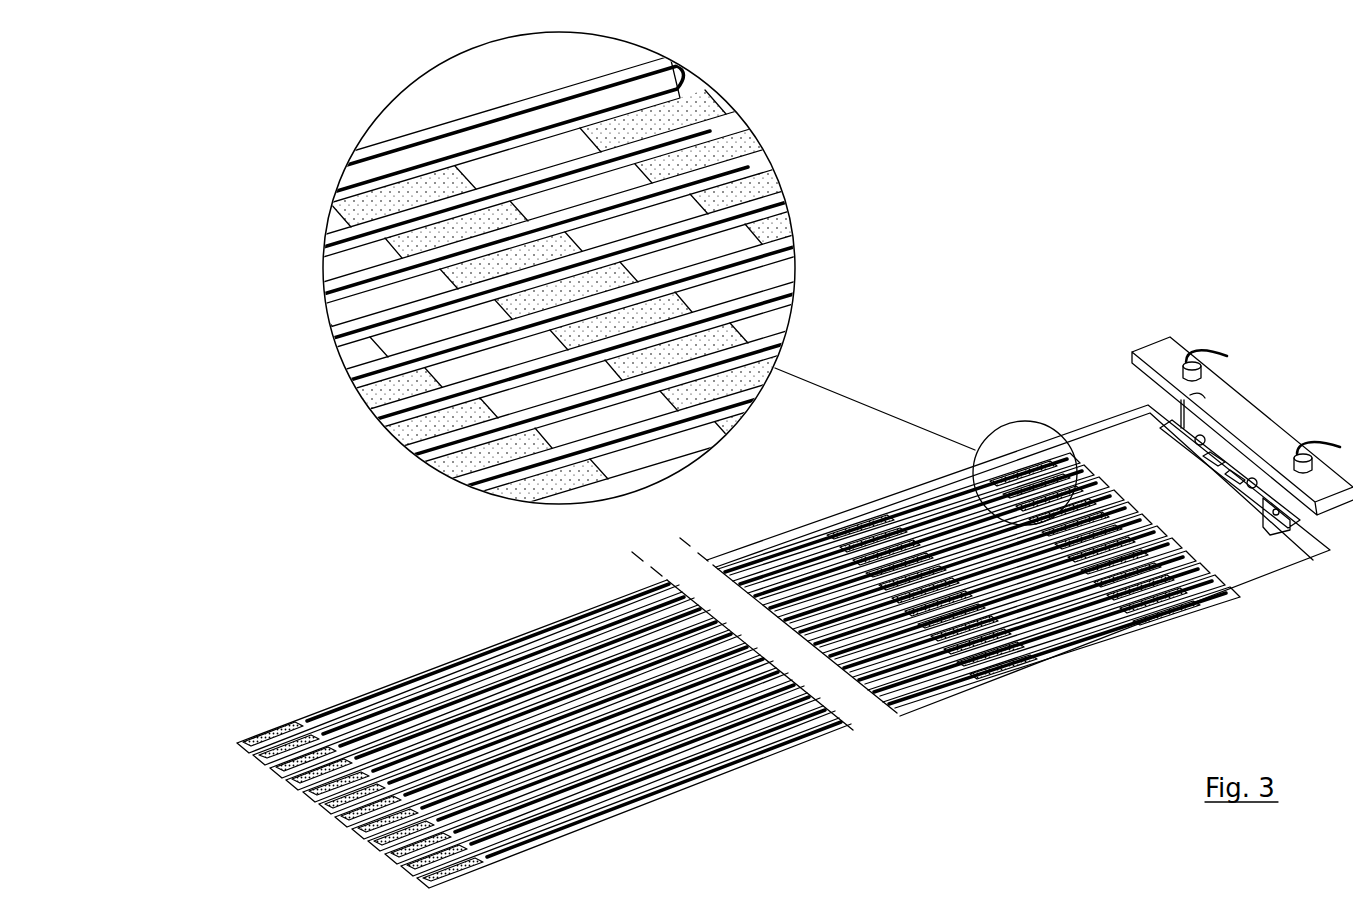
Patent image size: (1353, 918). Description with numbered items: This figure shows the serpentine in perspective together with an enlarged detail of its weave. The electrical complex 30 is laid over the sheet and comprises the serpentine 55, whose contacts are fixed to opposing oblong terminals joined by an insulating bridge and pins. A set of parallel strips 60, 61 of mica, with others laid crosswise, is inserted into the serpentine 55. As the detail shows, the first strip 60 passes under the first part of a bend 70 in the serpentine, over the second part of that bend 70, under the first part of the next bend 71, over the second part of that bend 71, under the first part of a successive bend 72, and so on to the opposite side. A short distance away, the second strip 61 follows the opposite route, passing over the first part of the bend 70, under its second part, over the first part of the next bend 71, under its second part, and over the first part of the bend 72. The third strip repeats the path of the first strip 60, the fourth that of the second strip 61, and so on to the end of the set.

The electrical complex 30 is at (1262, 400).
The serpentine 55 is at (434, 414).
The first strip 60 is at (773, 309).
The second strip 61 is at (352, 283).
The bend 70 is at (688, 98).
The next bend 71 is at (730, 132).
The successive bend 72 is at (765, 164).